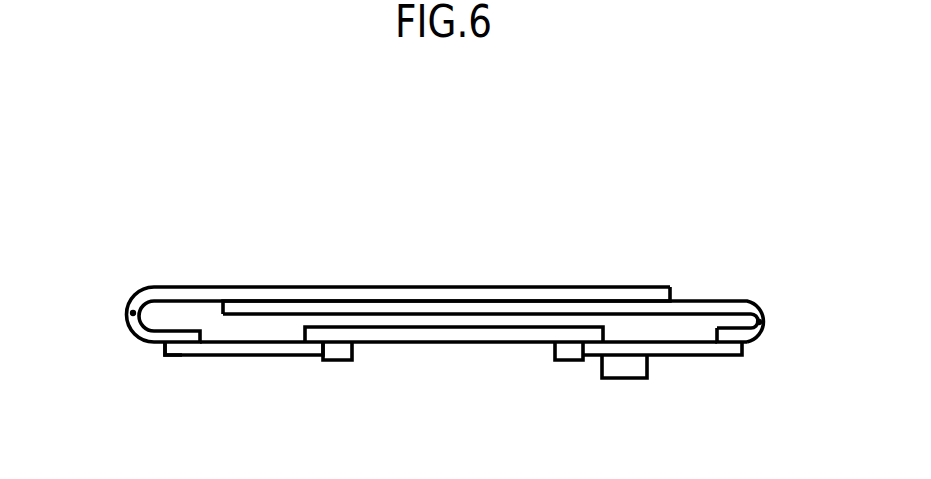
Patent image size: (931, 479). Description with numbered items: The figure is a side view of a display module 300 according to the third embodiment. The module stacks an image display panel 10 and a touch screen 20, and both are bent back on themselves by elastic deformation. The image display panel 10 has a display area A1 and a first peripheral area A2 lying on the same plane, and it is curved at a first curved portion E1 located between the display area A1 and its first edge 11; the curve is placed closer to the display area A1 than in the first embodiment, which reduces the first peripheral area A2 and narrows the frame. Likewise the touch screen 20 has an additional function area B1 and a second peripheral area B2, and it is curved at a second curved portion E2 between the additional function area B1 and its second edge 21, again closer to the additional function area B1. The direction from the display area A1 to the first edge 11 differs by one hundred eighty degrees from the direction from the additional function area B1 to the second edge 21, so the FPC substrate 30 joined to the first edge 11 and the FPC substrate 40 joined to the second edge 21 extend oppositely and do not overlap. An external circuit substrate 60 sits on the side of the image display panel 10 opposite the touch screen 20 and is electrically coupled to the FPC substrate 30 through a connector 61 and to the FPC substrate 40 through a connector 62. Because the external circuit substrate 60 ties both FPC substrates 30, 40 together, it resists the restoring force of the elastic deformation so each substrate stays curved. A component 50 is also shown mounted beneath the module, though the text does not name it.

The display module 300 is at (715, 170).
The image display panel 10 is at (722, 308).
The first edge 11 is at (730, 342).
The touch screen 20 is at (177, 292).
The second edge 21 is at (177, 343).
The FPC substrate 30 is at (692, 356).
The FPC substrate 40 is at (237, 356).
The circuit component 50 is at (618, 368).
The external circuit substrate 60 is at (434, 341).
The connector 61 is at (570, 360).
The connector 62 is at (345, 360).
The display area A1 is at (512, 316).
The first peripheral area A2 is at (752, 297).
The additional function area B1 is at (445, 286).
The second peripheral area B2 is at (132, 288).
The first curved portion E1 is at (759, 322).
The second curved portion E2 is at (133, 313).